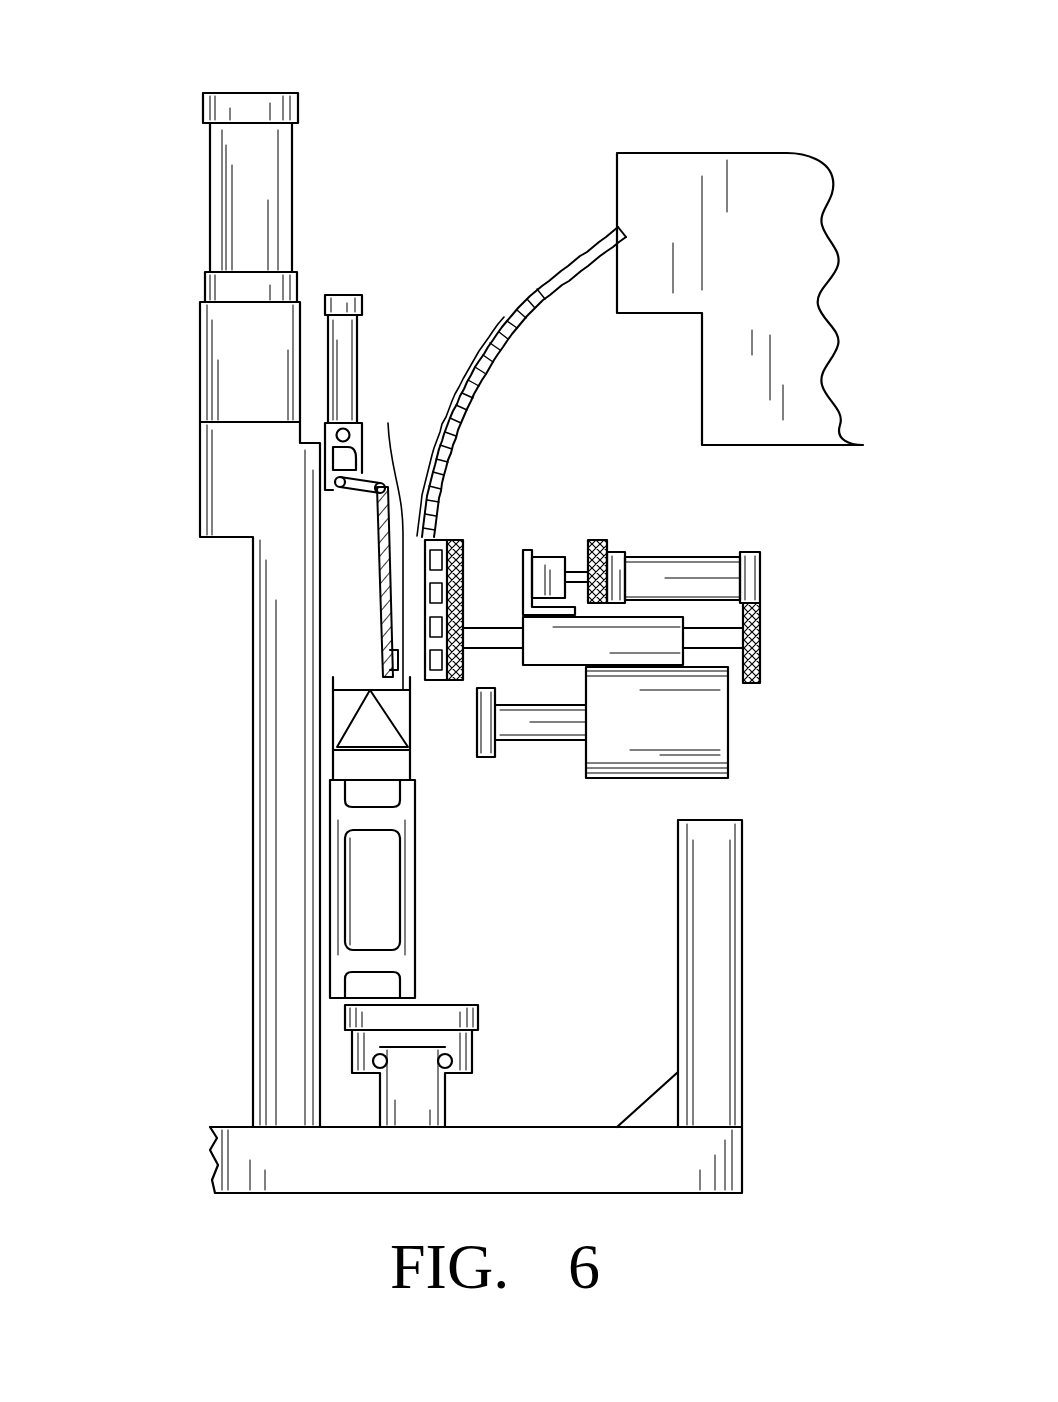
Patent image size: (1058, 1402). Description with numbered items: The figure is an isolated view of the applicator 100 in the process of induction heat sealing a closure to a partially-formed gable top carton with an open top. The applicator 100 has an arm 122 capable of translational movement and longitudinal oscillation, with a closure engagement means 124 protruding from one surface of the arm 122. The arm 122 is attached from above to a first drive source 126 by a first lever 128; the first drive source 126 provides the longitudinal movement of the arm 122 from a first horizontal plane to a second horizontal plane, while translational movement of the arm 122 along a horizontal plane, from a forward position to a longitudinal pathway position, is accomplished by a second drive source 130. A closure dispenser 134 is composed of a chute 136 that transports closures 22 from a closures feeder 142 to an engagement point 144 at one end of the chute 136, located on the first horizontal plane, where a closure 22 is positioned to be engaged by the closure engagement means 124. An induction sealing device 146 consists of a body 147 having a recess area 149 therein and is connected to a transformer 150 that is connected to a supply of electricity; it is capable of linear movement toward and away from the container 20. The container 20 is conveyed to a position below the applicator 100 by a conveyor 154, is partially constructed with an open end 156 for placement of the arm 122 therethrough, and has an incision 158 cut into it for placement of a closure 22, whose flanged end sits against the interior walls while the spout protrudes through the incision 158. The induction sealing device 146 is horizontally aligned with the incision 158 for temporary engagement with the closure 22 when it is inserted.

The applicator 100 is at (520, 225).
The closures feeder 142 is at (717, 153).
The closure 22 is at (510, 340).
The chute 136 is at (510, 310).
The first drive source 126 is at (357, 337).
The first lever 128 is at (333, 460).
The closure engagement means 124 is at (396, 536).
The arm 122 is at (367, 543).
The closure dispenser 134 is at (627, 350).
The engagement point 144 is at (462, 618).
The second drive source 130 is at (683, 555).
The induction sealing device 146 is at (768, 705).
The recess area 149 is at (488, 722).
The body 147 is at (495, 740).
The transformer 150 is at (728, 740).
The open end 156 is at (357, 687).
The container 20 is at (372, 738).
The incision 158 is at (412, 727).
The conveyor 154 is at (440, 988).